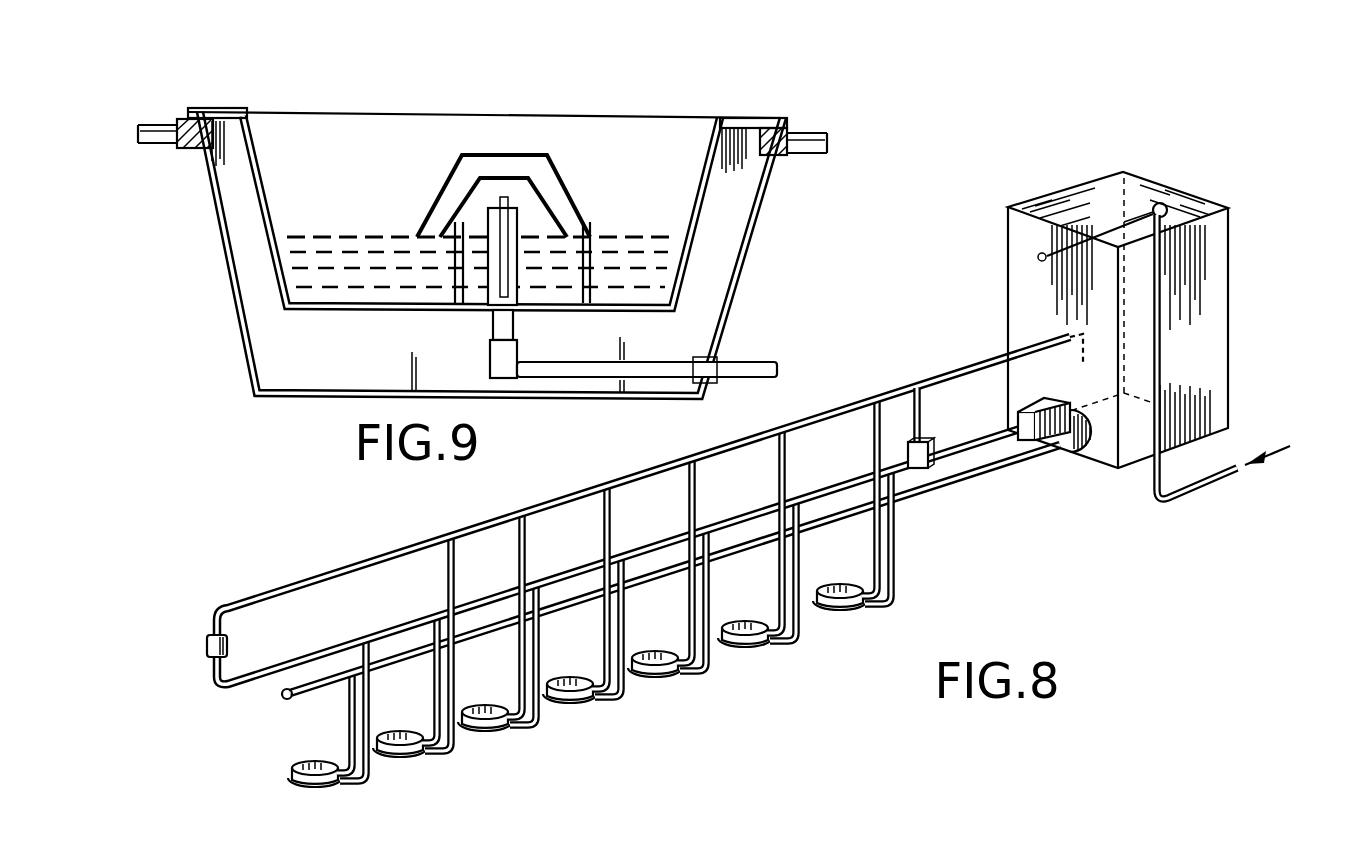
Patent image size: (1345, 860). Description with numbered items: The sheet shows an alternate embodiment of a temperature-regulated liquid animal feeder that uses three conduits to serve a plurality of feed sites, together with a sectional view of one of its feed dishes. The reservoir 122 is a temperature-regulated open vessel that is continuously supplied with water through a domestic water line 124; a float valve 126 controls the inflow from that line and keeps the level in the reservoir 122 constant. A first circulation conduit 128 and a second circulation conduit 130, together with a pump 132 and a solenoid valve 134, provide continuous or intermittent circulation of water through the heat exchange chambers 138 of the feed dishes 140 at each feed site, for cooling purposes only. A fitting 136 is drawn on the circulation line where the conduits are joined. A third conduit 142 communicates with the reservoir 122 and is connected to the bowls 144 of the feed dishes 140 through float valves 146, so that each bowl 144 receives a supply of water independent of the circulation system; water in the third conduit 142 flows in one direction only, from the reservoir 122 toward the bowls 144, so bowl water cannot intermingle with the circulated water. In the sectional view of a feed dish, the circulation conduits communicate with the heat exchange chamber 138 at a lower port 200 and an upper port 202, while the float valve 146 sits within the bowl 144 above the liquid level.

In FIG. 8, the reservoir 122 is at (1230, 299).
In FIG. 8, the domestic water line 124 is at (1207, 484).
In FIG. 8, the float valve 126 is at (1162, 203).
In FIG. 9, the first circulation conduit 128 is at (157, 144).
In FIG. 8, the first circulation conduit 128 is at (994, 440).
In FIG. 9, the second circulation conduit 130 is at (812, 150).
In FIG. 8, the second circulation conduit 130 is at (962, 368).
In FIG. 8, the pump 132 is at (1088, 452).
In FIG. 8, the solenoid valve 134 is at (207, 646).
In FIG. 8, the valve fitting 136 is at (912, 450).
In FIG. 9, the heat exchange chamber 138 is at (305, 348).
In FIG. 8, the feed dish 140 is at (650, 688).
In FIG. 9, the third conduit 142 is at (750, 365).
In FIG. 8, the third conduit 142 is at (940, 487).
In FIG. 9, the bowl 144 is at (337, 182).
In FIG. 9, the float valve 146 is at (503, 180).
In FIG. 9, the lower port 200 is at (180, 118).
In FIG. 9, the upper port 202 is at (787, 128).